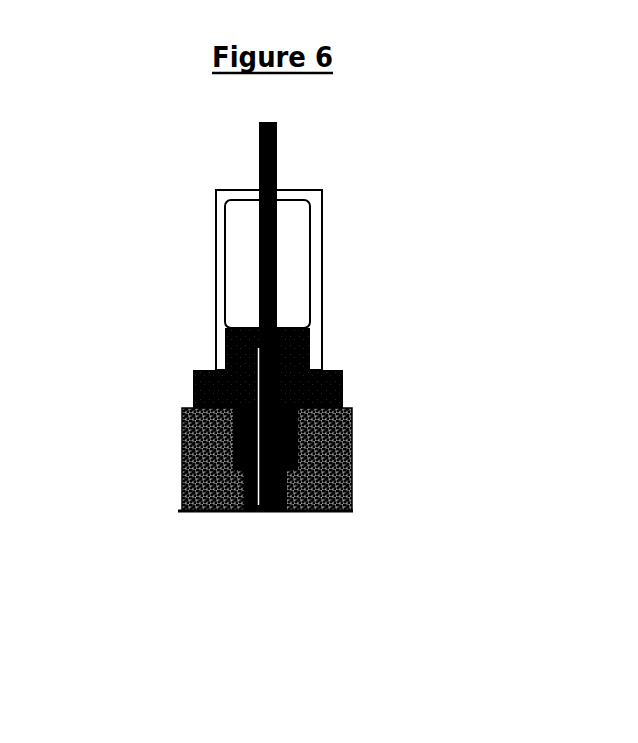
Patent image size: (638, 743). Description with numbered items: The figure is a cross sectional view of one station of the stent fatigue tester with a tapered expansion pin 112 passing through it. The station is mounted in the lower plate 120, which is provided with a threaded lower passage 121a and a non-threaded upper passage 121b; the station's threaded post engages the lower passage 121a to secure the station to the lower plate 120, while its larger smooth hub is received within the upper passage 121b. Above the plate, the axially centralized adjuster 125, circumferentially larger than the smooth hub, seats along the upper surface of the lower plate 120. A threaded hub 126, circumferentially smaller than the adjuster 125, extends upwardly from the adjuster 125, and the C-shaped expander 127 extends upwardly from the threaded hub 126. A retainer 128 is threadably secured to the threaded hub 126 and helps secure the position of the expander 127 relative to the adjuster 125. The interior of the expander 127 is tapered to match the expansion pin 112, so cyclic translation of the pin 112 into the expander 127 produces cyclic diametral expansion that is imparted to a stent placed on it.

The tapered expansion pin 112 is at (277, 149).
The C-shaped expander 127 is at (278, 268).
The retainer 128 is at (218, 253).
The threaded hub 126 is at (311, 343).
The adjuster 125 is at (344, 382).
The lower plate 120 is at (185, 456).
The non-threaded upper passage 121b is at (335, 443).
The lower passage 121a is at (288, 492).